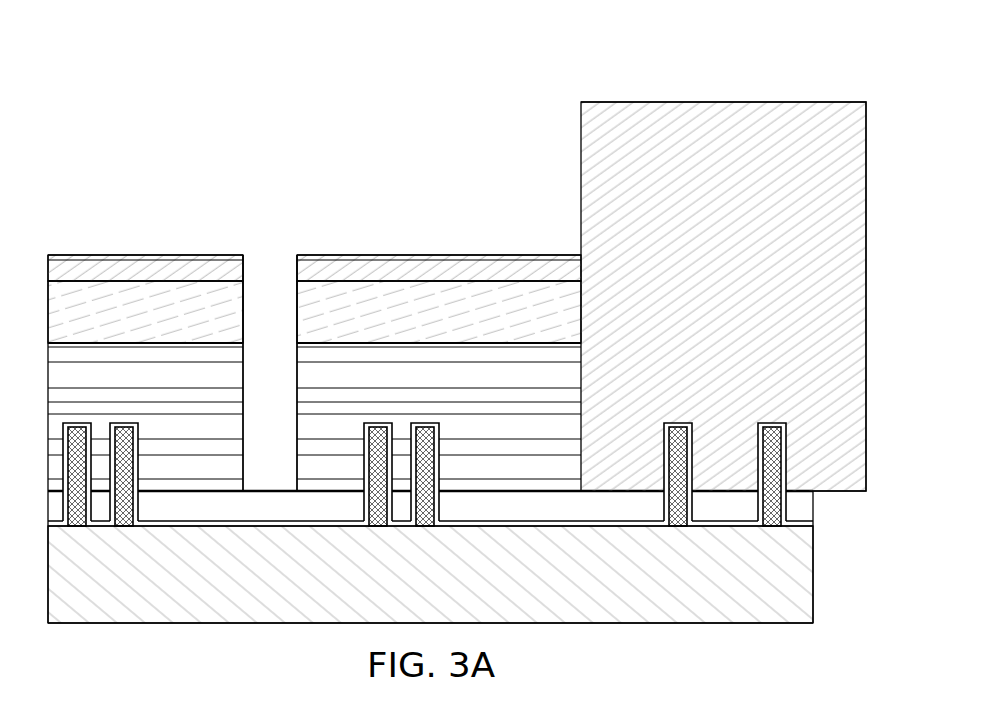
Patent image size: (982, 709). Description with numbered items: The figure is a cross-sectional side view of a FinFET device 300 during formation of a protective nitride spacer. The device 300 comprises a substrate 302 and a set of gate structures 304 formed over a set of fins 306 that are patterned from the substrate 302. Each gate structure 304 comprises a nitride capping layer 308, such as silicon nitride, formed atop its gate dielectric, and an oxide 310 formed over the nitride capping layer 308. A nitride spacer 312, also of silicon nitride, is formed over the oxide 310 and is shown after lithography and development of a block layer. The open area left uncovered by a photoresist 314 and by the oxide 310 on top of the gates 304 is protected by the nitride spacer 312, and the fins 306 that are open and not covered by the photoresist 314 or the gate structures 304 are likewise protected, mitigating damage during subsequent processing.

The device 300 is at (117, 170).
The substrate 302 is at (716, 609).
The gate structure 304 is at (222, 377).
The fin 306 is at (368, 512).
The nitride capping layer 308 is at (147, 272).
The oxide 310 is at (238, 270).
The nitride spacer 312 is at (203, 258).
The photoresist 314 is at (800, 118).